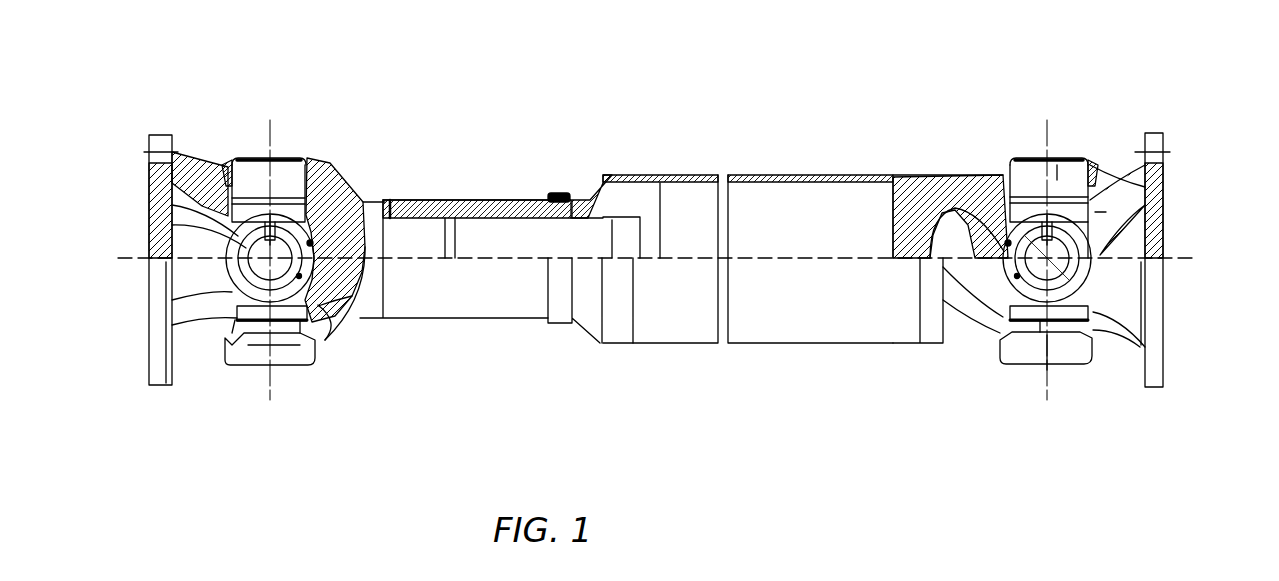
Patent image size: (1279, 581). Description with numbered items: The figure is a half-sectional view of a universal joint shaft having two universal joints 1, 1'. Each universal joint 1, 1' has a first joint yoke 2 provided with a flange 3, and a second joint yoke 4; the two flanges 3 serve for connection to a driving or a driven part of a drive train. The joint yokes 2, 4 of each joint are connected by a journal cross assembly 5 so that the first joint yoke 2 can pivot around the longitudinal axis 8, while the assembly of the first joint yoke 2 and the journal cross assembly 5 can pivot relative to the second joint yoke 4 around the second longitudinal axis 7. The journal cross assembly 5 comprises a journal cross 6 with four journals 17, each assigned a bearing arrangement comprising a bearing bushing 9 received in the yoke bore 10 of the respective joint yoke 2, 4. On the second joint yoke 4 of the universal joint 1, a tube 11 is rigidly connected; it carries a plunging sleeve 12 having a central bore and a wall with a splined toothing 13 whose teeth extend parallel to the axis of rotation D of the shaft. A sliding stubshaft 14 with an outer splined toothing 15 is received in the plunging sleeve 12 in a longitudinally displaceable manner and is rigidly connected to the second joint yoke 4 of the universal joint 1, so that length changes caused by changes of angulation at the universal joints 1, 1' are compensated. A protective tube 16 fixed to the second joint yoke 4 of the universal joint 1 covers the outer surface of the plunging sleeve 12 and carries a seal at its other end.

The universal joint 1 is at (656, 238).
The universal joint 1' is at (1076, 90).
The first joint yoke 2 is at (232, 300).
The flange 3 is at (165, 338).
The second joint yoke 4 is at (338, 313).
The journal cross assembly 5 is at (224, 158).
The journal cross 6 is at (1065, 220).
The second longitudinal axis 7 is at (1047, 370).
The longitudinal axis 8 is at (1058, 267).
The bearing bushing 9 is at (1057, 175).
The yoke bore 10 is at (1013, 160).
The tube 11 is at (780, 175).
The plunging sleeve 12 is at (497, 215).
The splined toothing 13 is at (413, 222).
The sliding stubshaft 14 is at (612, 238).
The splined toothing 15 is at (583, 198).
The protective tube 16 is at (460, 205).
The journal 17 is at (1100, 214).
The axis of rotation D is at (812, 260).